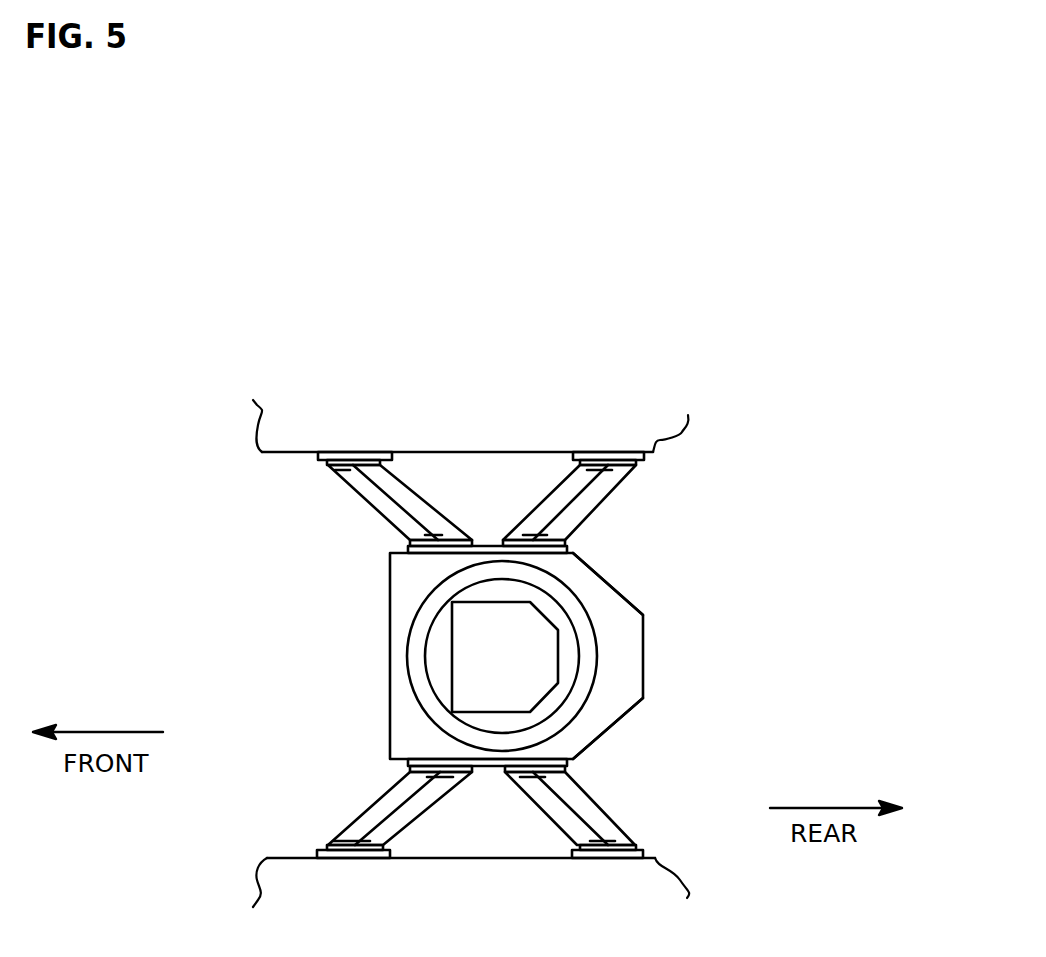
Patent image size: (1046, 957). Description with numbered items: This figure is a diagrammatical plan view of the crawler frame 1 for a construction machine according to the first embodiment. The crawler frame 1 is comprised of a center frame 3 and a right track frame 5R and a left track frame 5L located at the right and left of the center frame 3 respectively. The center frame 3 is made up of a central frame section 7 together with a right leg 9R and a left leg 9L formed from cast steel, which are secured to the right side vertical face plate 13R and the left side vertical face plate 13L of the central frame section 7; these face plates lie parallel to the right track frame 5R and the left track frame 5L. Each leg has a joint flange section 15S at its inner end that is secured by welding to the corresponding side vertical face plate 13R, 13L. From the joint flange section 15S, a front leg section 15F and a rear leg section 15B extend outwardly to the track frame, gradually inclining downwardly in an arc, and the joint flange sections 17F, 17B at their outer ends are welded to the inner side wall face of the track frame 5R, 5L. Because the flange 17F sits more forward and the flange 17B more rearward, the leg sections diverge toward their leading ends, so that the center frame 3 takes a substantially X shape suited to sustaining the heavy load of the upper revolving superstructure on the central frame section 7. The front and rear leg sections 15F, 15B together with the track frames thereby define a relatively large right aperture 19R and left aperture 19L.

The crawler frame 1 is at (258, 646).
The center frame 3 is at (515, 660).
The right track frame 5R is at (642, 423).
The left track frame 5L is at (633, 895).
The central frame section 7 is at (620, 667).
The right leg 9R is at (565, 530).
The left leg 9L is at (577, 790).
The right side vertical face plate 13R is at (390, 550).
The left side vertical face plate 13L is at (395, 762).
The front leg section 15F is at (347, 483).
The rear leg section 15B is at (613, 488).
The joint flange section 15S is at (473, 552).
The joint flange section 17F is at (345, 452).
The joint flange section 17B is at (587, 452).
The right aperture 19R is at (468, 478).
The left aperture 19L is at (483, 833).